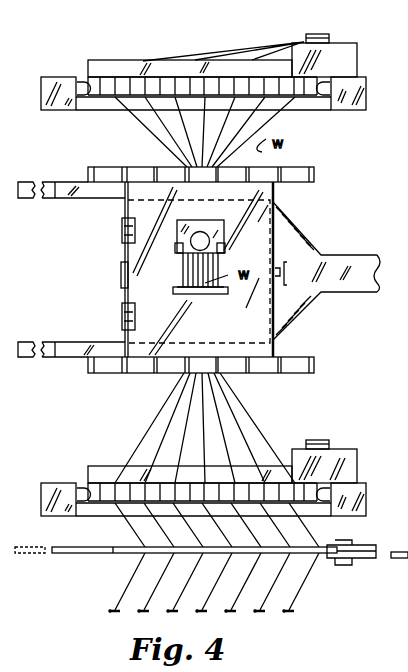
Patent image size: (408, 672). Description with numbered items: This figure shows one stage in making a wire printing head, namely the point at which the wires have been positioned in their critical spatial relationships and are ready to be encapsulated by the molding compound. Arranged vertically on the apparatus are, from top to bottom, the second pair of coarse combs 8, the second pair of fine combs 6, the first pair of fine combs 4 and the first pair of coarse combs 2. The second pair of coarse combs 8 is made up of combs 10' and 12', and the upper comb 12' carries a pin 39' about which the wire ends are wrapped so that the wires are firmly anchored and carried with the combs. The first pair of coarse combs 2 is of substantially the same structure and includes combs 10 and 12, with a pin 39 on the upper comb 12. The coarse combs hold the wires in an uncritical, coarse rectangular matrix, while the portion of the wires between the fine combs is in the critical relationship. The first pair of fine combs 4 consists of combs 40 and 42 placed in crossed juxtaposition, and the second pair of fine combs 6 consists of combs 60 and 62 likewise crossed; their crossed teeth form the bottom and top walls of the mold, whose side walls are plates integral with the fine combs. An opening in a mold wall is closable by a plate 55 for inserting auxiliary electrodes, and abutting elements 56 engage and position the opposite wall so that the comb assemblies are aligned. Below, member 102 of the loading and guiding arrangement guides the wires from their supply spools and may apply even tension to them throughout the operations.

The first pair of coarse combs 2 is at (282, 414).
The first pair of fine combs 4 is at (302, 352).
The second pair of fine combs 6 is at (287, 203).
The second pair of coarse combs 8 is at (290, 18).
The coarse comb 10 is at (196, 482).
The coarse comb 10' is at (199, 67).
The coarse comb 12 is at (177, 465).
The upper coarse comb 12' is at (182, 50).
The pin 39 is at (330, 457).
The pin 39' is at (266, 52).
The fine comb 40 is at (117, 342).
The fine comb 42 is at (108, 367).
The plate 55 is at (202, 238).
The abutting elements 56 is at (135, 227).
The fine comb 60 is at (100, 190).
The fine comb 62 is at (123, 167).
The member 102 is at (326, 556).